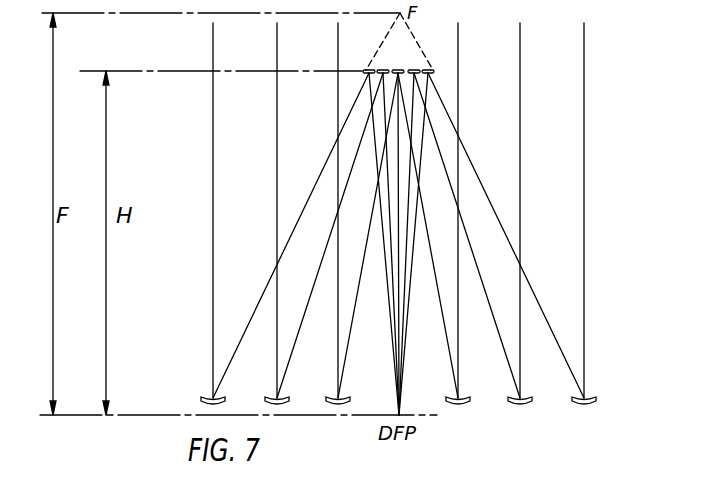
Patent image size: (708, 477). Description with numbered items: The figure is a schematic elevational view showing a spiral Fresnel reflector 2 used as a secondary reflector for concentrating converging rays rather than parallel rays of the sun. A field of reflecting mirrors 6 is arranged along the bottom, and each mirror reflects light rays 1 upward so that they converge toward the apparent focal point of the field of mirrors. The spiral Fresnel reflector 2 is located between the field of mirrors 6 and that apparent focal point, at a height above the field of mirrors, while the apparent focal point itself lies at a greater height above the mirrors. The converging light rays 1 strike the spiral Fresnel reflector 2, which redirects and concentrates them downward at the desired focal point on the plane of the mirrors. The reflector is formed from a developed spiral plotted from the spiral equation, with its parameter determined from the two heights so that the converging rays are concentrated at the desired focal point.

The light rays 1 is at (584, 141).
The spiral Fresnel reflector 2 is at (434, 74).
The reflecting mirrors 6 is at (587, 400).